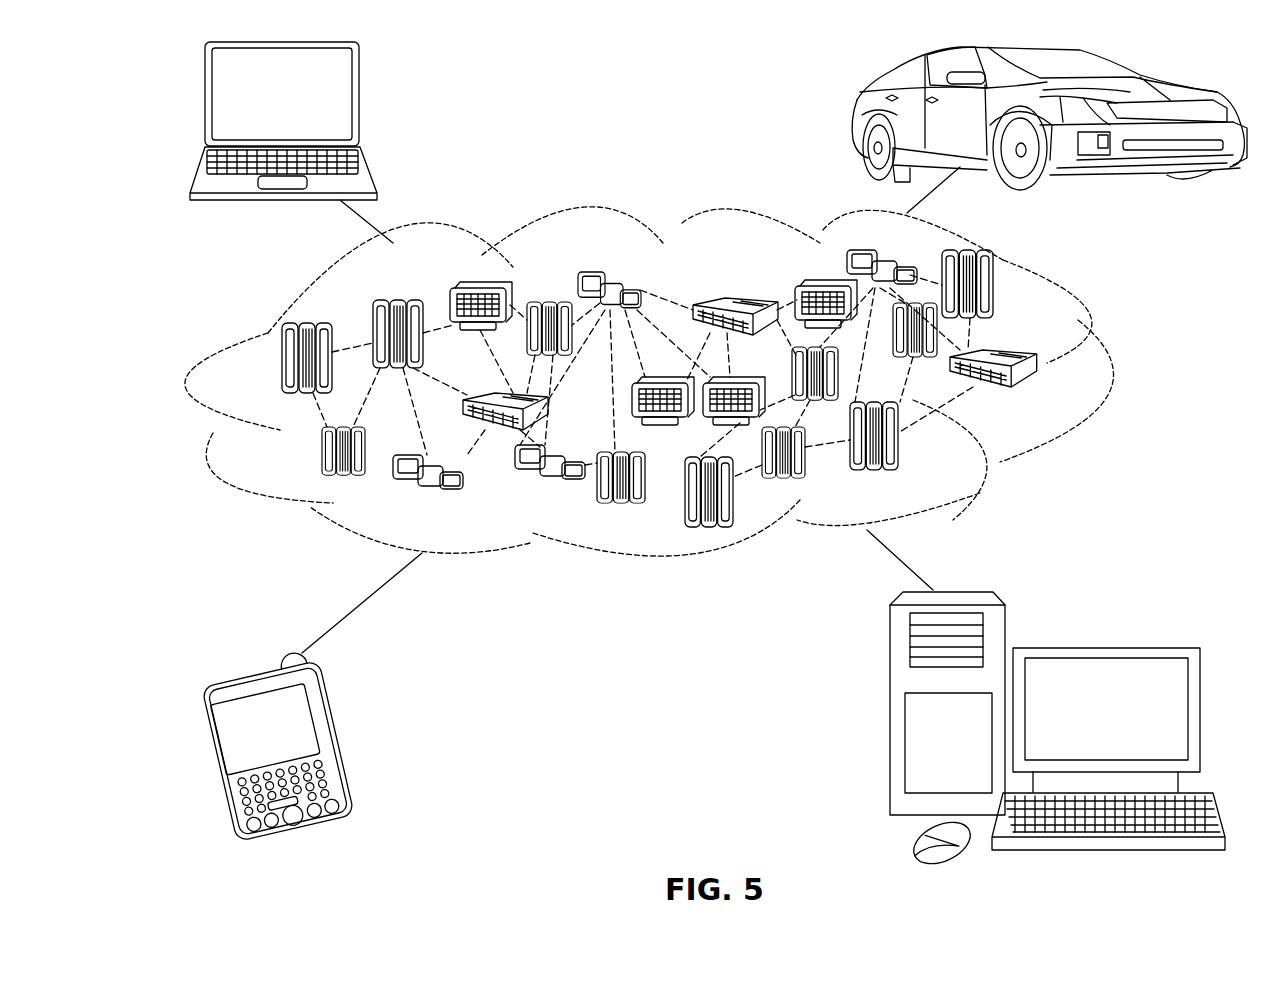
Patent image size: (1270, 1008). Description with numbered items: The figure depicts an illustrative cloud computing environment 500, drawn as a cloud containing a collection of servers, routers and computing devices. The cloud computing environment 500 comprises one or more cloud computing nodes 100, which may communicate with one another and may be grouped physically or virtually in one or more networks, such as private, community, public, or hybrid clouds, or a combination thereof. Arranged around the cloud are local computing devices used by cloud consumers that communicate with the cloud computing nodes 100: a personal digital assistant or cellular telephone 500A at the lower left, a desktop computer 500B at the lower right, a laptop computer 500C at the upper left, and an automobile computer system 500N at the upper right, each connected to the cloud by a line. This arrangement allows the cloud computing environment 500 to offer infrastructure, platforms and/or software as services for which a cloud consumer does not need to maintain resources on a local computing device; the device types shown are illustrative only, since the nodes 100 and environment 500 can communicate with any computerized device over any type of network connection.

The laptop computer 500C is at (360, 100).
The automobile computer system 500N is at (857, 117).
The personal digital assistant (PDA) or cellular telephone 500A is at (348, 740).
The desktop computer 500B is at (1103, 643).
The cloud computing environment 500 is at (686, 381).
The cloud computing nodes 100 is at (1037, 397).